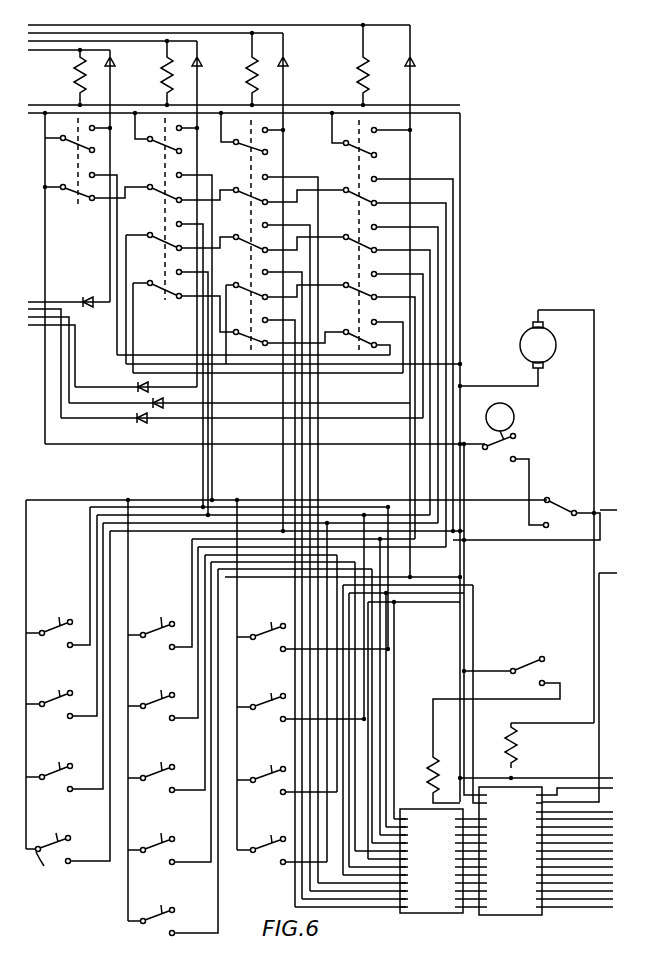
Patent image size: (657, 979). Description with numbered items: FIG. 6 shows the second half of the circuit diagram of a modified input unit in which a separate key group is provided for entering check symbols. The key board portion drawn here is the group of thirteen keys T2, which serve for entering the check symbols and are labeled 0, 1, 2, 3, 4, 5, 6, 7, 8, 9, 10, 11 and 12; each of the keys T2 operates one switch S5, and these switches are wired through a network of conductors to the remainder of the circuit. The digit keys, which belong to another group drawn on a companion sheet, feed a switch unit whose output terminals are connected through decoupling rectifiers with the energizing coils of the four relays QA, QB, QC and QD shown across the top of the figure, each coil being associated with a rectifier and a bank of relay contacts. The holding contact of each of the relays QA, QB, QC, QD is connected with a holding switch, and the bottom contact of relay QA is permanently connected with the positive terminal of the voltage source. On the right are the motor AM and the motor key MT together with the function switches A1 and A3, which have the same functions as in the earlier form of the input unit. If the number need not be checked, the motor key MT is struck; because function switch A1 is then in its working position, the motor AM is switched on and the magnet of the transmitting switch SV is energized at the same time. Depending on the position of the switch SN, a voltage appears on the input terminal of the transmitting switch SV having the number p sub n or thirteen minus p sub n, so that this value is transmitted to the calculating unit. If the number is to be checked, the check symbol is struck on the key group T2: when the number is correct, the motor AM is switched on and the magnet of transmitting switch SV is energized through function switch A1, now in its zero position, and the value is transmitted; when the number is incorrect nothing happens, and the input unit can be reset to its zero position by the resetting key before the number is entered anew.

The relay QA is at (79, 176).
The relay QB is at (166, 214).
The relay QC is at (252, 282).
The relay QD is at (371, 301).
The motor AM is at (526, 516).
The motor key MT is at (511, 418).
The function switch A1 is at (562, 502).
The switch A3 is at (524, 666).
The switch SN is at (443, 861).
The transmitting switch SV is at (546, 851).
The keys T2 is at (58, 588).
The switch S5 is at (46, 867).
The key 0 is at (173, 752).
The key 1 is at (68, 697).
The key 2 is at (169, 713).
The key 3 is at (282, 835).
The key 4 is at (64, 657).
The key 5 is at (166, 674).
The key 6 is at (287, 765).
The key 7 is at (61, 617).
The key 8 is at (163, 634).
The key 9 is at (301, 692).
The key 10 is at (58, 577).
The key 11 is at (160, 594).
The key 12 is at (313, 622).